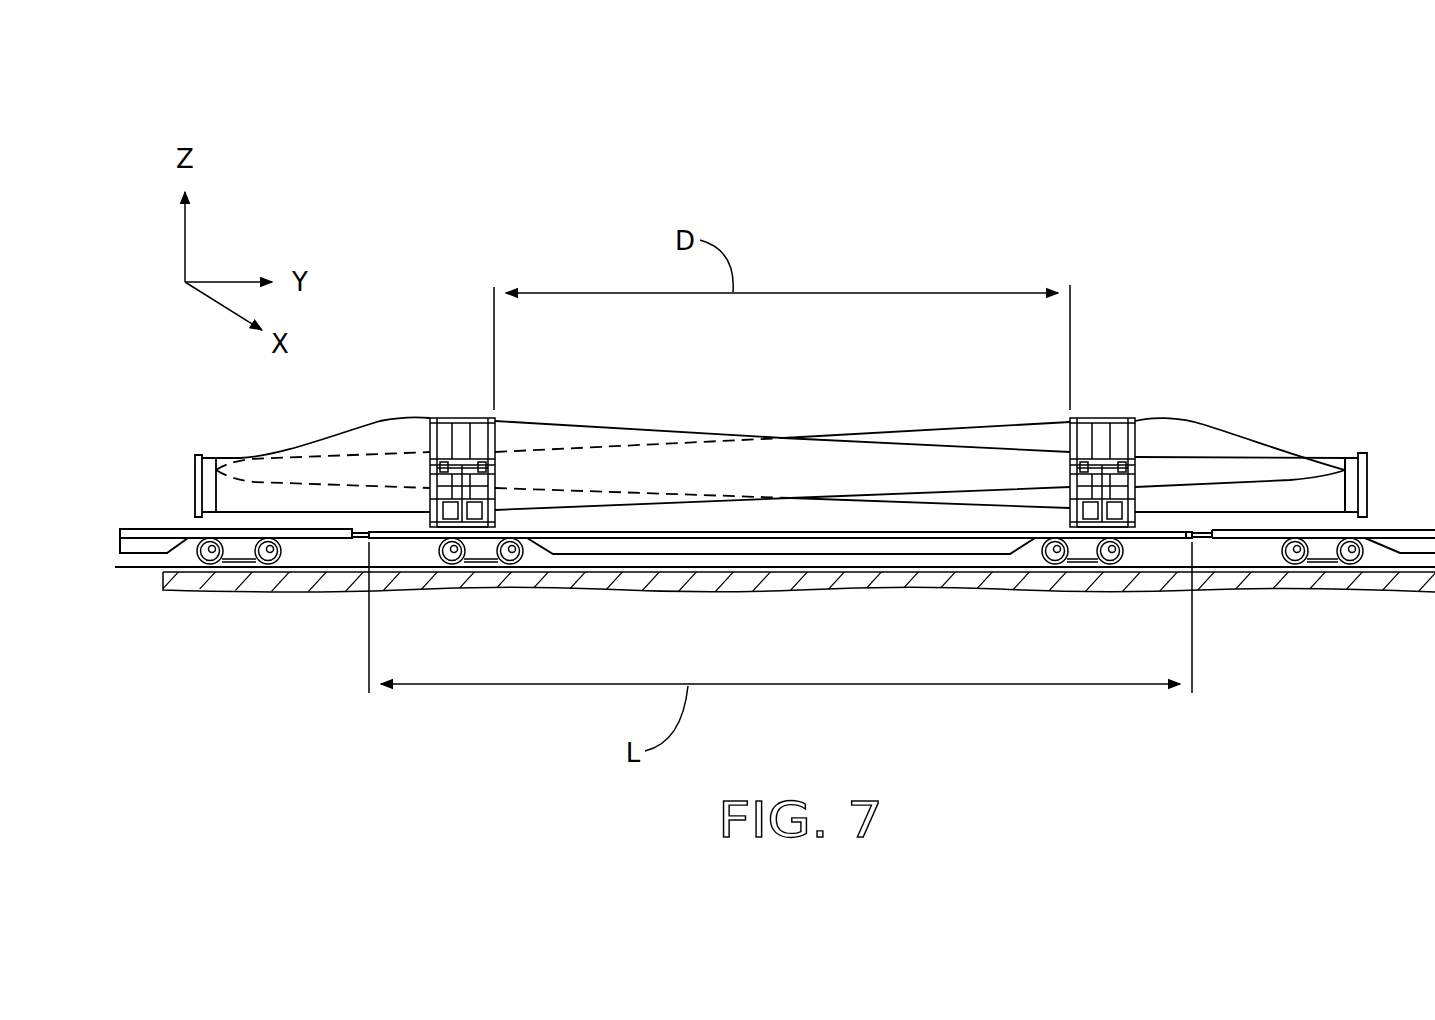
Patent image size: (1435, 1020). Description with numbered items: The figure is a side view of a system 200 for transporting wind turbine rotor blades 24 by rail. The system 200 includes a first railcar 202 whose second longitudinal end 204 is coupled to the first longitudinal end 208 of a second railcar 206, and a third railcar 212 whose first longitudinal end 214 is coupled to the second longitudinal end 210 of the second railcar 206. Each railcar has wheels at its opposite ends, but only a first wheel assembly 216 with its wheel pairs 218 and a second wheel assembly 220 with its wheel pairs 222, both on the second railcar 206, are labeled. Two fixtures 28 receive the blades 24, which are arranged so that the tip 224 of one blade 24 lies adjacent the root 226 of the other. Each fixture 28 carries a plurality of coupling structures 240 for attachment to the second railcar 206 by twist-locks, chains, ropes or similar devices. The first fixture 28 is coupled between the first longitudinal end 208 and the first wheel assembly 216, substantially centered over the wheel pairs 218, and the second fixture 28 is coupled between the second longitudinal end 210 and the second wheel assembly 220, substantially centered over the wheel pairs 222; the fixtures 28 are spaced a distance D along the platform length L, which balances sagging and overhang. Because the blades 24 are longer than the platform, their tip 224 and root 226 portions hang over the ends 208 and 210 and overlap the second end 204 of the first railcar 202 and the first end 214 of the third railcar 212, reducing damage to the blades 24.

The system 200 is at (791, 198).
The rotor blade 24 is at (749, 439).
The fixture 28 is at (466, 404).
The first railcar 202 is at (137, 552).
The second longitudinal end 204 is at (327, 534).
The second railcar 206 is at (790, 601).
The first longitudinal end 208 is at (380, 534).
The second longitudinal end 210 is at (1175, 536).
The third railcar 212 is at (1323, 582).
The first longitudinal end 214 is at (1232, 538).
The first wheel assembly 216 is at (506, 604).
The wheel pairs 218 is at (455, 542).
The second wheel assembly 220 is at (1031, 604).
The wheel pairs 222 is at (1043, 556).
The tip portion 224 is at (268, 470).
The root portion 226 is at (221, 456).
The coupling structures 240 is at (432, 530).